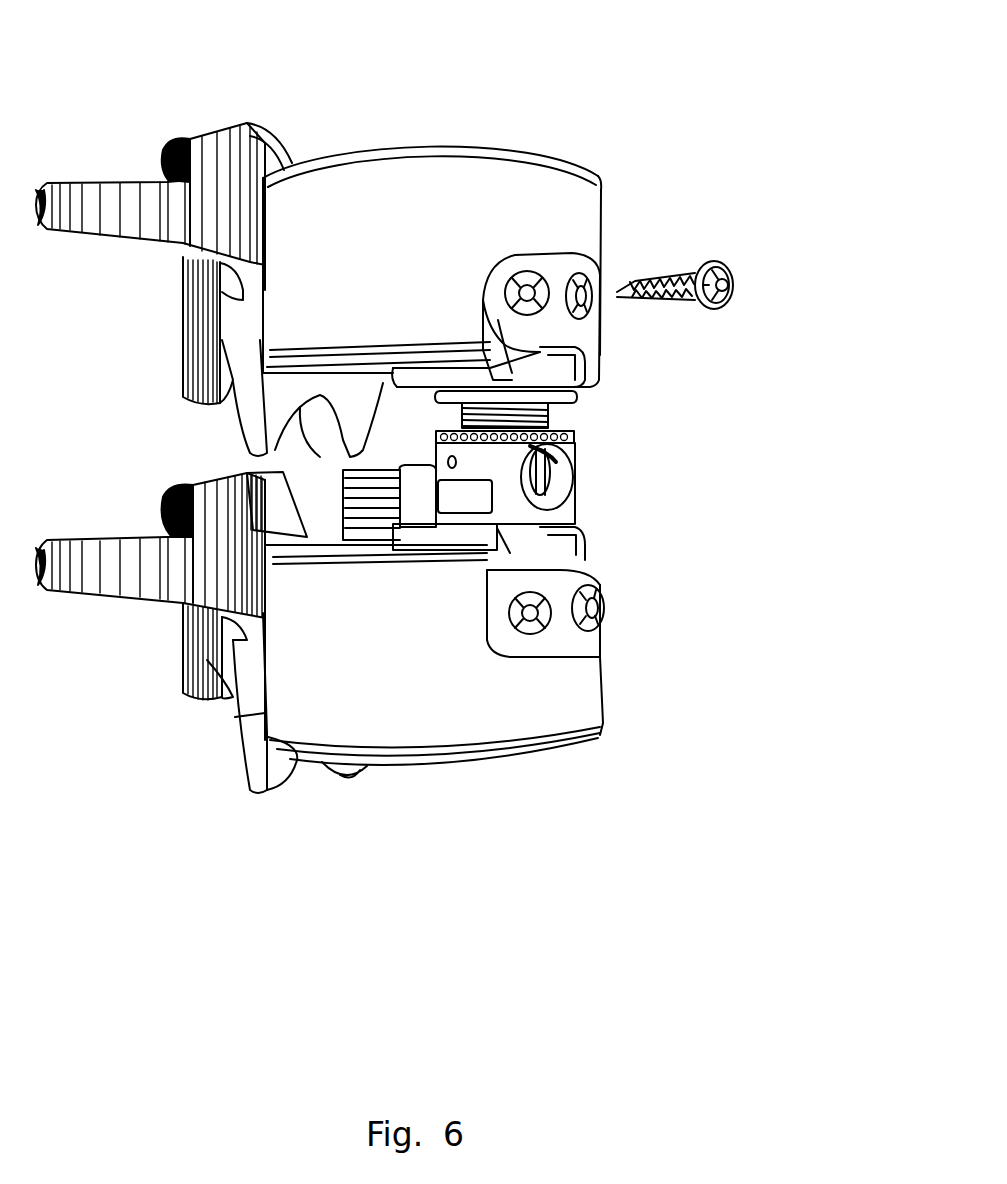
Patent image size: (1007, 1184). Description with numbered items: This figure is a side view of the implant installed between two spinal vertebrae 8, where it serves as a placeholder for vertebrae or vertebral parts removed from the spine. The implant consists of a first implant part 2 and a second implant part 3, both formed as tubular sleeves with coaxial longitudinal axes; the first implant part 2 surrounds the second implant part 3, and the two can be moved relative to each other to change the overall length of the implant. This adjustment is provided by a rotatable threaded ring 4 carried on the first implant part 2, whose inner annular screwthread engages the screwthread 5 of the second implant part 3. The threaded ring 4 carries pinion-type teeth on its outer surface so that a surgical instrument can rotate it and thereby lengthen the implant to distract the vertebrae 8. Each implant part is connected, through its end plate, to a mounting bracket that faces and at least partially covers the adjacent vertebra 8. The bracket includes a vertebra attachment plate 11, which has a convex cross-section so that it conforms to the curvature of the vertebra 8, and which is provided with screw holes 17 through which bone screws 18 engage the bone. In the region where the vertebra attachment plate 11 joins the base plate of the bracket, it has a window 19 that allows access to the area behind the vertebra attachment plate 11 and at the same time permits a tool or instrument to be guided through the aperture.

The first implant part 2 is at (573, 495).
The second implant part 3 is at (560, 418).
The threaded ring 4 is at (573, 435).
The screwthread 5 is at (560, 402).
The vertebra 8 is at (347, 147).
The vertebra attachment plate 11 is at (568, 278).
The screw hole 17 is at (590, 290).
The bone screw 18 is at (745, 303).
The window 19 is at (603, 563).